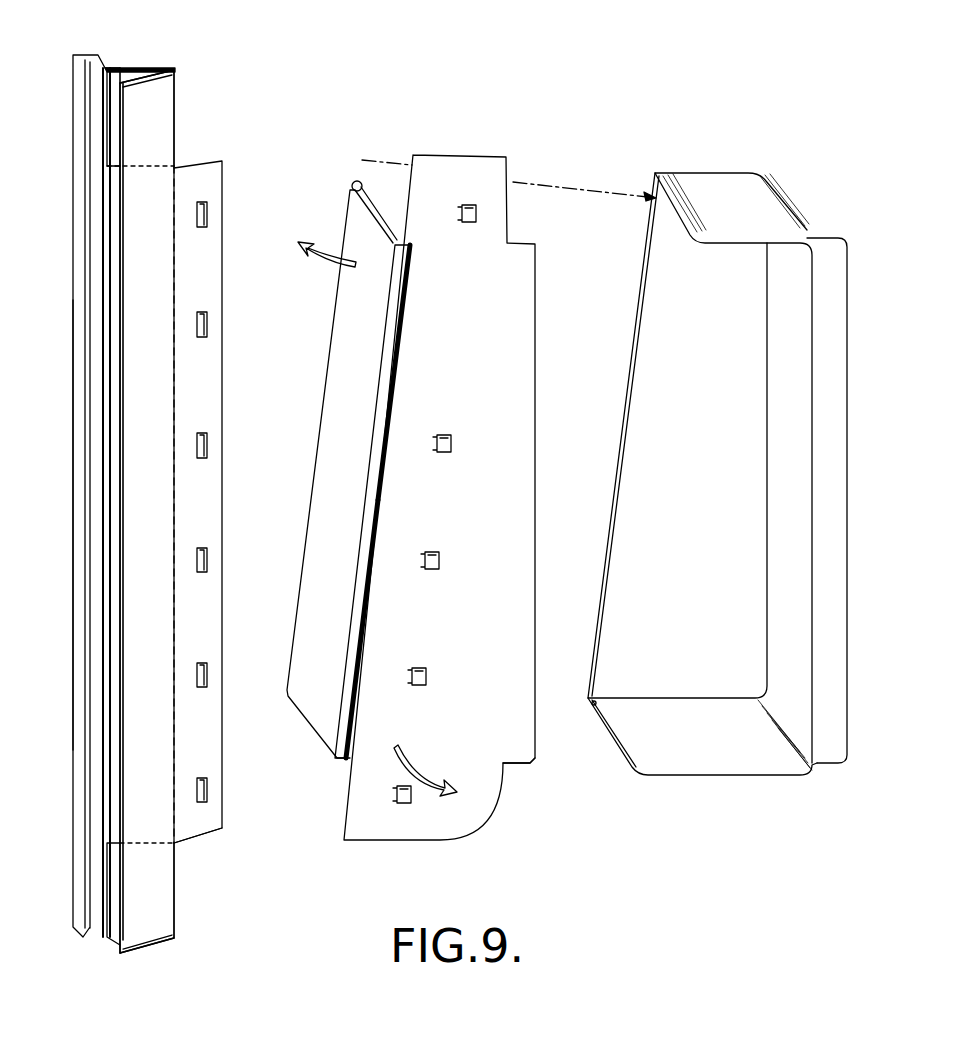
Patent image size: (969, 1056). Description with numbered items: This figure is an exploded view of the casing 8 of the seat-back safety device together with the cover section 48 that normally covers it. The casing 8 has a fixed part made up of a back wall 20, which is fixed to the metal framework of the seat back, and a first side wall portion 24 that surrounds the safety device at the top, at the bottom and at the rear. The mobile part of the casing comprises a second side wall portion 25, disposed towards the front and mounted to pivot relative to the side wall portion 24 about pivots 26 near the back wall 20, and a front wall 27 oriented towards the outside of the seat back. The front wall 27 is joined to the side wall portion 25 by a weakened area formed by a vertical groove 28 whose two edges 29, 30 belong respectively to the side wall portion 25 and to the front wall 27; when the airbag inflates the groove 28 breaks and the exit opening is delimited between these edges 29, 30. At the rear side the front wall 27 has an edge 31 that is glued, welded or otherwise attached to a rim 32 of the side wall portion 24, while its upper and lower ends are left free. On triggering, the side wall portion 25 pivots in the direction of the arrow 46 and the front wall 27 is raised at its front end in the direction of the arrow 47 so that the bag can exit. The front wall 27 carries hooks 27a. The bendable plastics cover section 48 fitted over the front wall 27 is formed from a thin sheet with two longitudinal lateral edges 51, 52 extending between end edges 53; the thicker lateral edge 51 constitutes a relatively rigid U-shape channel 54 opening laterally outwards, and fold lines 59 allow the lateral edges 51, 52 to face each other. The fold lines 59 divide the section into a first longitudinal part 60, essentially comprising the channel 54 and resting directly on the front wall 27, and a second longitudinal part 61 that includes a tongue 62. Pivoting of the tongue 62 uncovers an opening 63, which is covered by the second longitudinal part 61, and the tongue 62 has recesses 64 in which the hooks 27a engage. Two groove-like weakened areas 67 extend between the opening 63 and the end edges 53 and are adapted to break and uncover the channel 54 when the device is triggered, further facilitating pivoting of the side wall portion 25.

The casing 8 is at (720, 495).
The back wall 20 is at (647, 381).
The first side wall portion 24 is at (715, 763).
The second side wall portion 25 is at (340, 367).
The pivot 26 is at (353, 183).
The front wall 27 is at (463, 713).
The hook 27a is at (475, 212).
The vertical groove 28 is at (387, 495).
The edge of the groove 29 is at (380, 468).
The edge of the groove 30 is at (369, 598).
The edge 31 is at (517, 755).
The rim 32 is at (828, 750).
The arrow 46 is at (315, 260).
The arrow 47 is at (400, 758).
The cover section 48 is at (146, 954).
The lateral edge 51 is at (75, 730).
The lateral edge 52 is at (120, 760).
The end edge 53 is at (155, 67).
The U-shape channel 54 is at (78, 880).
The fold line 59 is at (175, 117).
The first longitudinal part 60 is at (113, 78).
The second longitudinal part 61 is at (155, 95).
The tongue 62 is at (213, 520).
The opening 63 is at (118, 540).
The recess 64 is at (203, 228).
The weakened area 67 is at (107, 128).